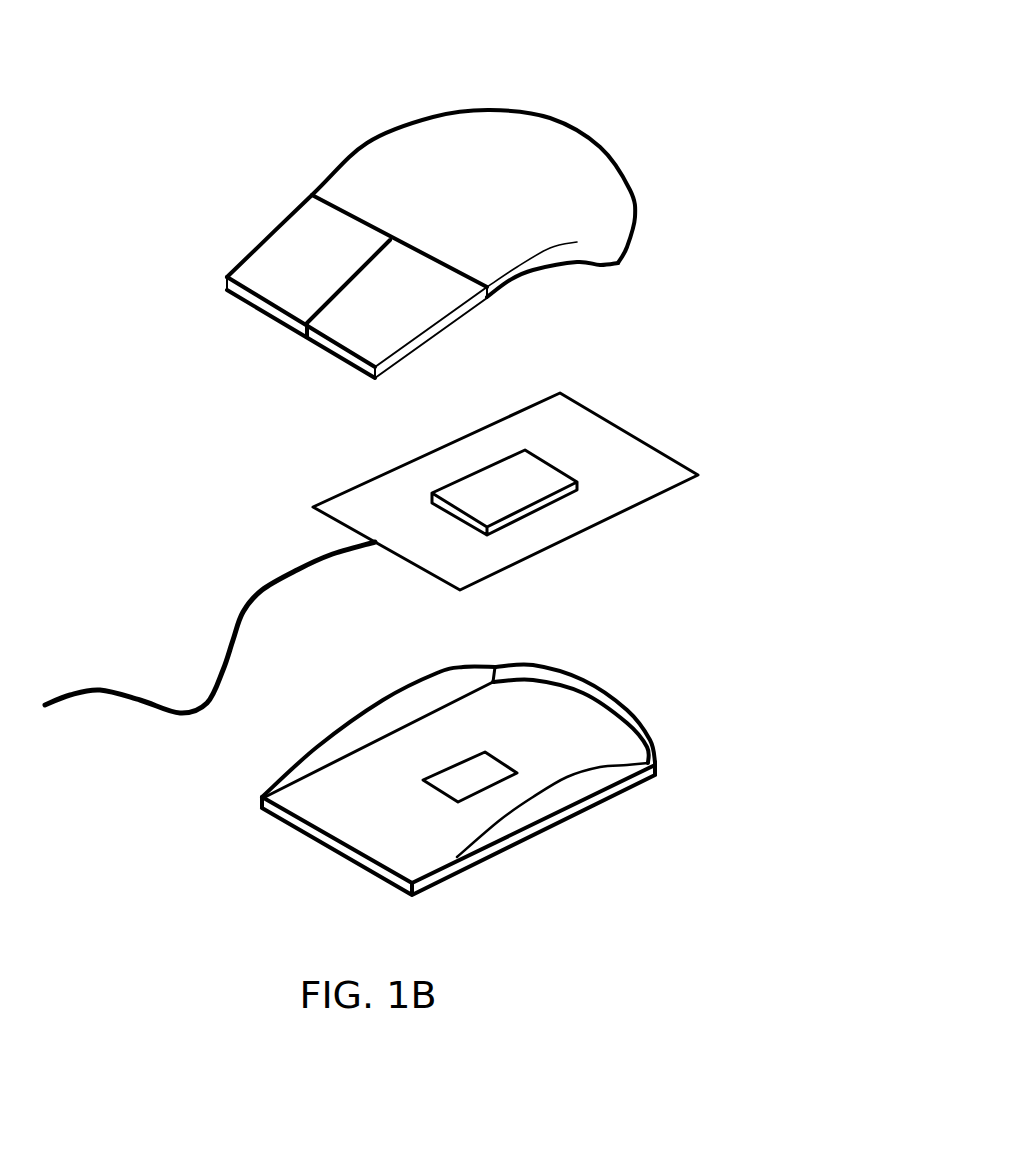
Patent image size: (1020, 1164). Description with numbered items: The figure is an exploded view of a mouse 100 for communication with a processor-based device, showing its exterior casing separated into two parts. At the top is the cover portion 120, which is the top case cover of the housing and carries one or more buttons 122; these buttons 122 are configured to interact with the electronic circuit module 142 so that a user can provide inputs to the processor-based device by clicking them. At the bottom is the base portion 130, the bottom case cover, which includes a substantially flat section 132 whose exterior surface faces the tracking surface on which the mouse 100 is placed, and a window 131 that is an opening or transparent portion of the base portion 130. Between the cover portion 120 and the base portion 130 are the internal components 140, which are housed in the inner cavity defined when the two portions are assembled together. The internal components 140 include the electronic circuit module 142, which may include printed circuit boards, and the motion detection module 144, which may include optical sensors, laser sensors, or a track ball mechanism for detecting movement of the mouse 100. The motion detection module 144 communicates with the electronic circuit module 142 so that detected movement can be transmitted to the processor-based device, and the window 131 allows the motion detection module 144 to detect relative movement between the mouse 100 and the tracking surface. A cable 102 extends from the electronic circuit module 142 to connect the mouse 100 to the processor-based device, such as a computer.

The mouse 100 is at (625, 82).
The cable 102 is at (110, 695).
The cover portion 120 is at (370, 210).
The buttons 122 is at (312, 239).
The base portion 130 is at (458, 782).
The window 131 is at (468, 775).
The substantially flat section 132 is at (552, 722).
The internal components 140 is at (435, 469).
The electronic circuit module 142 is at (605, 440).
The motion detection module 144 is at (495, 490).